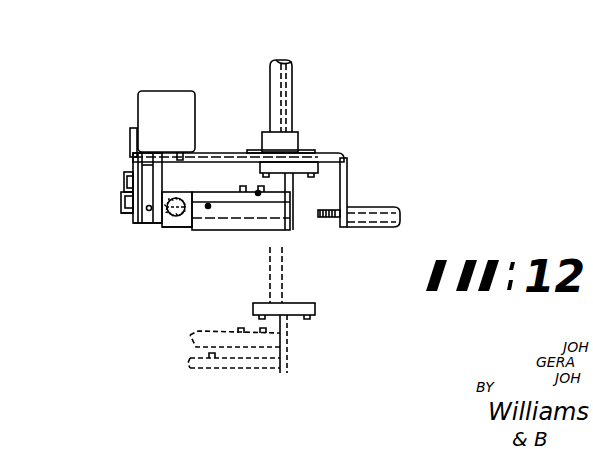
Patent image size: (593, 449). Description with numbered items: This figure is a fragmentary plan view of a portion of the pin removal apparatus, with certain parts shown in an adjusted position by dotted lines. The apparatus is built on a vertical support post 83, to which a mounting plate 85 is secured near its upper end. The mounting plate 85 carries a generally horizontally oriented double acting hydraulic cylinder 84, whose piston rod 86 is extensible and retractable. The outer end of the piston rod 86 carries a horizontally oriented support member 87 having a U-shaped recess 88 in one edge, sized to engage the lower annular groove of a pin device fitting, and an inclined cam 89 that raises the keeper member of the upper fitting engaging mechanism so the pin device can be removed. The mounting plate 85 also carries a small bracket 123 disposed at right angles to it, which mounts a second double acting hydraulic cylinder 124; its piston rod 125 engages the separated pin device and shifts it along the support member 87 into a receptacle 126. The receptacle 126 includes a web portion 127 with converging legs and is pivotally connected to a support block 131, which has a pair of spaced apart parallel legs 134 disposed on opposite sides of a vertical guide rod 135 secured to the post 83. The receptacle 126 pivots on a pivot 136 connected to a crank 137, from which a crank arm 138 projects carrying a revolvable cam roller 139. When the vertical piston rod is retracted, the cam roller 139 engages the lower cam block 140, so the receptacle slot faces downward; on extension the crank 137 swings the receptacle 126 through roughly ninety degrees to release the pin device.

The vertical support post 83 is at (151, 91).
The double acting hydraulic cylinder 84 is at (294, 78).
The mounting plate 85 is at (328, 156).
The piston rod 86 is at (283, 270).
The support member 87 is at (229, 231).
The U-shaped recess 88 is at (208, 204).
The inclined cam 89 is at (258, 191).
The bracket 123 is at (348, 162).
The double acting hydraulic cylinder 124 is at (398, 213).
The piston rod 125 is at (328, 210).
The receptacle 126 is at (163, 236).
The web portion 127 is at (181, 229).
The support block 131 is at (145, 223).
The legs 134 is at (168, 152).
The guide rod 135 is at (147, 150).
The pivot 136 is at (118, 207).
The crank 137 is at (112, 221).
The crank arm 138 is at (123, 178).
The cam roller 139 is at (137, 163).
The lower cam block 140 is at (130, 142).